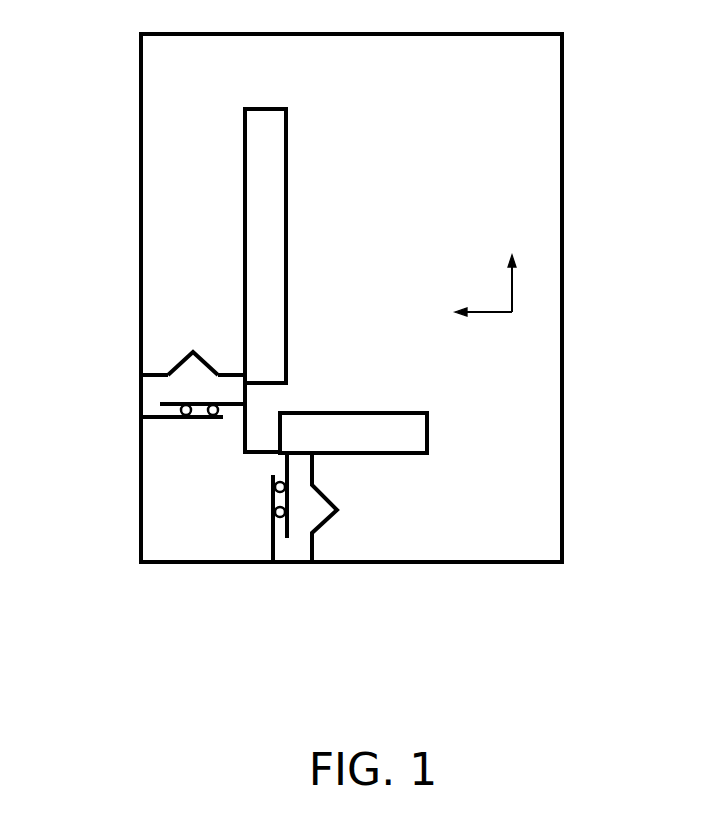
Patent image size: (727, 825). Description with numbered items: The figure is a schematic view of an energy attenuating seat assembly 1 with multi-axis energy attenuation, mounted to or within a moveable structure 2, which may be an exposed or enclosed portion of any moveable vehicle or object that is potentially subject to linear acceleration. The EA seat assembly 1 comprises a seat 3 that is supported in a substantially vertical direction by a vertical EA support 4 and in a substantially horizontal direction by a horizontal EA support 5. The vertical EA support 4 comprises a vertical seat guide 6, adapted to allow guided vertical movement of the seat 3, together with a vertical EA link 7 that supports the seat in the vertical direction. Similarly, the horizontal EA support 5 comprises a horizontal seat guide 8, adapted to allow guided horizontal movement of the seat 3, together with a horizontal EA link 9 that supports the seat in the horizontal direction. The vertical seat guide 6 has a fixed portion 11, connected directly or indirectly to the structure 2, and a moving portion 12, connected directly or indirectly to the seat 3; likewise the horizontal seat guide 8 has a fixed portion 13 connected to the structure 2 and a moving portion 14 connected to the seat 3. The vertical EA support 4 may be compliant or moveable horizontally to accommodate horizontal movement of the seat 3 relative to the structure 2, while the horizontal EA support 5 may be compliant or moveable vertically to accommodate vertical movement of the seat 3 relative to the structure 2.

The EA seat assembly 1 is at (395, 240).
The moveable structure 2 is at (562, 155).
The seat 3 is at (287, 165).
The vertical EA support 4 is at (372, 502).
The horizontal EA support 5 is at (198, 306).
The vertical seat guide 6 is at (250, 508).
The vertical EA link 7 is at (335, 513).
The horizontal seat guide 8 is at (170, 441).
The horizontal EA link 9 is at (179, 363).
The fixed portion 11 is at (273, 538).
The moving portion 12 is at (288, 474).
The fixed portion 13 is at (153, 413).
The moving portion 14 is at (232, 406).